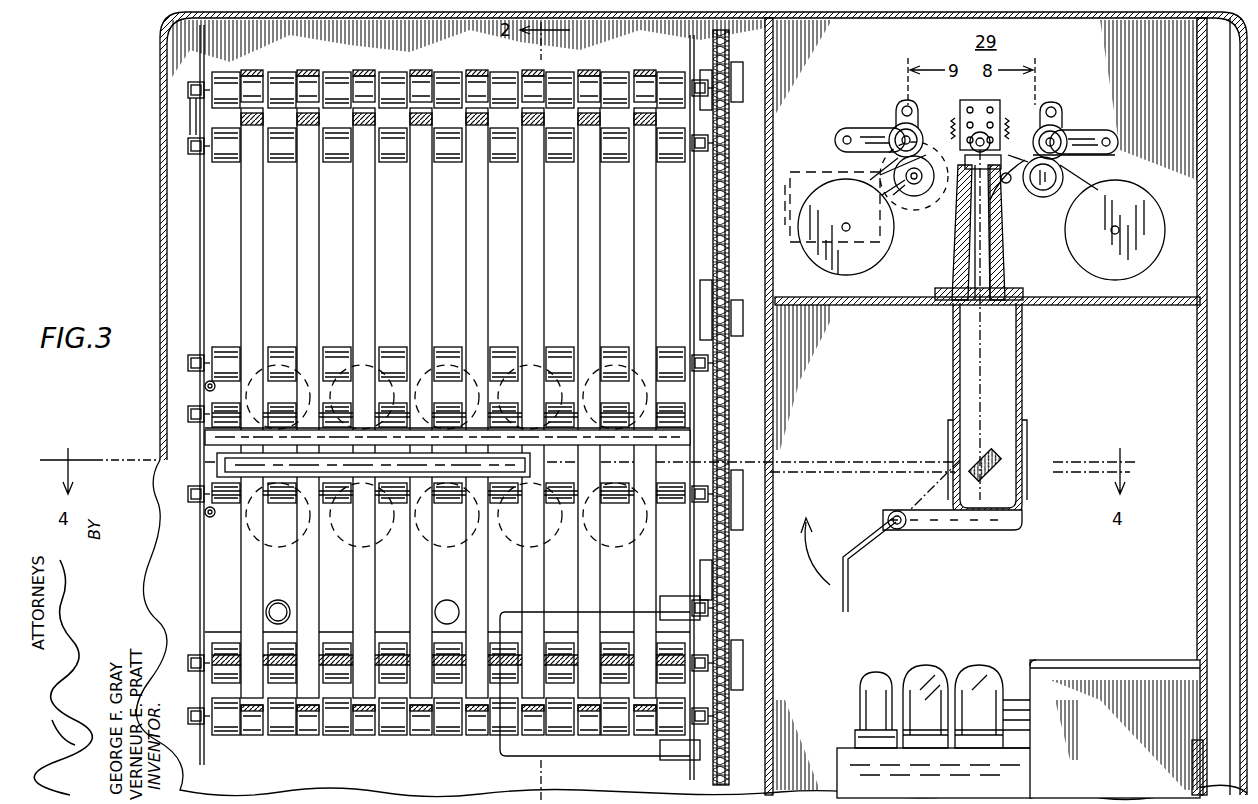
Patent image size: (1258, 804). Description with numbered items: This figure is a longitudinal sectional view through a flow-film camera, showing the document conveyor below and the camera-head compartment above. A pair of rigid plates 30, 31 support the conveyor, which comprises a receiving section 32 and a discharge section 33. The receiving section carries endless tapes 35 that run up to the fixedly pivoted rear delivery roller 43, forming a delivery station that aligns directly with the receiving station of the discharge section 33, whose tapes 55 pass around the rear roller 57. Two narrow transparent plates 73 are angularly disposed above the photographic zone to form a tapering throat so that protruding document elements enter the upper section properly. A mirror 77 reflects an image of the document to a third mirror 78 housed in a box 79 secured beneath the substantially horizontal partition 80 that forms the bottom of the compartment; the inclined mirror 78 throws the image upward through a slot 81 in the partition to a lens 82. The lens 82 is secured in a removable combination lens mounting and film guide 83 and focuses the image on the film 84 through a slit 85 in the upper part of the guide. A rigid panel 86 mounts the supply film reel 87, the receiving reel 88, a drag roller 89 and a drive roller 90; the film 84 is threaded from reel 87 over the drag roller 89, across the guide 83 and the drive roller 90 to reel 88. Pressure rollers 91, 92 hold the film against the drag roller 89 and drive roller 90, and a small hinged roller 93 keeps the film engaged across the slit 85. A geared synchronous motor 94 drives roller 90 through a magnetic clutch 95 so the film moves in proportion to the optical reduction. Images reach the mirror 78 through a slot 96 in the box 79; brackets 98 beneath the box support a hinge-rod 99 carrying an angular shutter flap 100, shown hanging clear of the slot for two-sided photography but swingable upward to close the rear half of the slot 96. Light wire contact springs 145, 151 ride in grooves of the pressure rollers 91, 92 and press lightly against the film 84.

The rigid plate 30 is at (778, 604).
The rigid plate 31 is at (225, 437).
The receiving section 32 is at (275, 754).
The discharge section 33 is at (456, 67).
The endless tapes 35 is at (250, 598).
The rear delivery roller 43 is at (215, 500).
The endless tapes 55 is at (245, 258).
The rear roller 57 is at (215, 398).
The transparent plates 73 is at (222, 444).
The mirror 77 is at (222, 465).
The third mirror 78 is at (1000, 470).
The box 79 is at (1022, 360).
The partition 80 is at (1160, 308).
The slot 81 is at (990, 305).
The lens 82 is at (1000, 205).
The combination lens mounting and film guide 83 is at (1005, 162).
The film 84 is at (955, 158).
The slit 85 is at (1010, 180).
The panel 86 is at (1190, 278).
The film reel 87 is at (1153, 208).
The receiving reel 88 is at (870, 262).
The drag roller 89 is at (1047, 190).
The drive roller 90 is at (926, 200).
The pressure roller 91 is at (1060, 128).
The pressure roller 92 is at (895, 128).
The hinged roller 93 is at (982, 104).
The geared synchronous motor 94 is at (825, 172).
The magnetic clutch 95 is at (912, 228).
The slot 96 is at (955, 460).
The bracket 98 is at (985, 532).
The hinge-rod 99 is at (902, 530).
The shutter flap 100 is at (852, 588).
The contact spring 145 is at (1042, 118).
The contact spring 151 is at (900, 112).